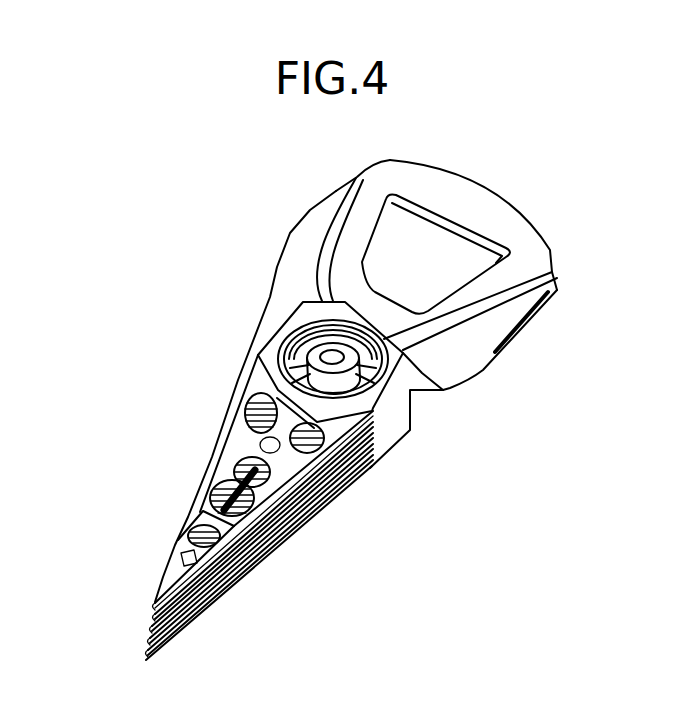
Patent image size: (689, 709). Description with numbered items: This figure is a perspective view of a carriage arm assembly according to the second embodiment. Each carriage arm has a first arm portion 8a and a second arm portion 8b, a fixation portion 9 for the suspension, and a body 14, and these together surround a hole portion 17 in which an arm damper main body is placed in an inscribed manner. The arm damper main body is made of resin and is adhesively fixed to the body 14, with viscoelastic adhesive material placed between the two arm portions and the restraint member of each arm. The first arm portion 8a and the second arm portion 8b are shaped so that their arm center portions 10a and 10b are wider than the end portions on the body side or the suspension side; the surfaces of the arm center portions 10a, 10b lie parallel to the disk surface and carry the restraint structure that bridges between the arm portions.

The body 14 is at (263, 342).
The second arm portion 8b is at (243, 393).
The first arm portion 8a is at (343, 473).
The arm center portion 10b is at (233, 445).
The arm center portion 10a is at (283, 490).
The hole portion 17 is at (233, 483).
The fixation portion 9 is at (174, 543).